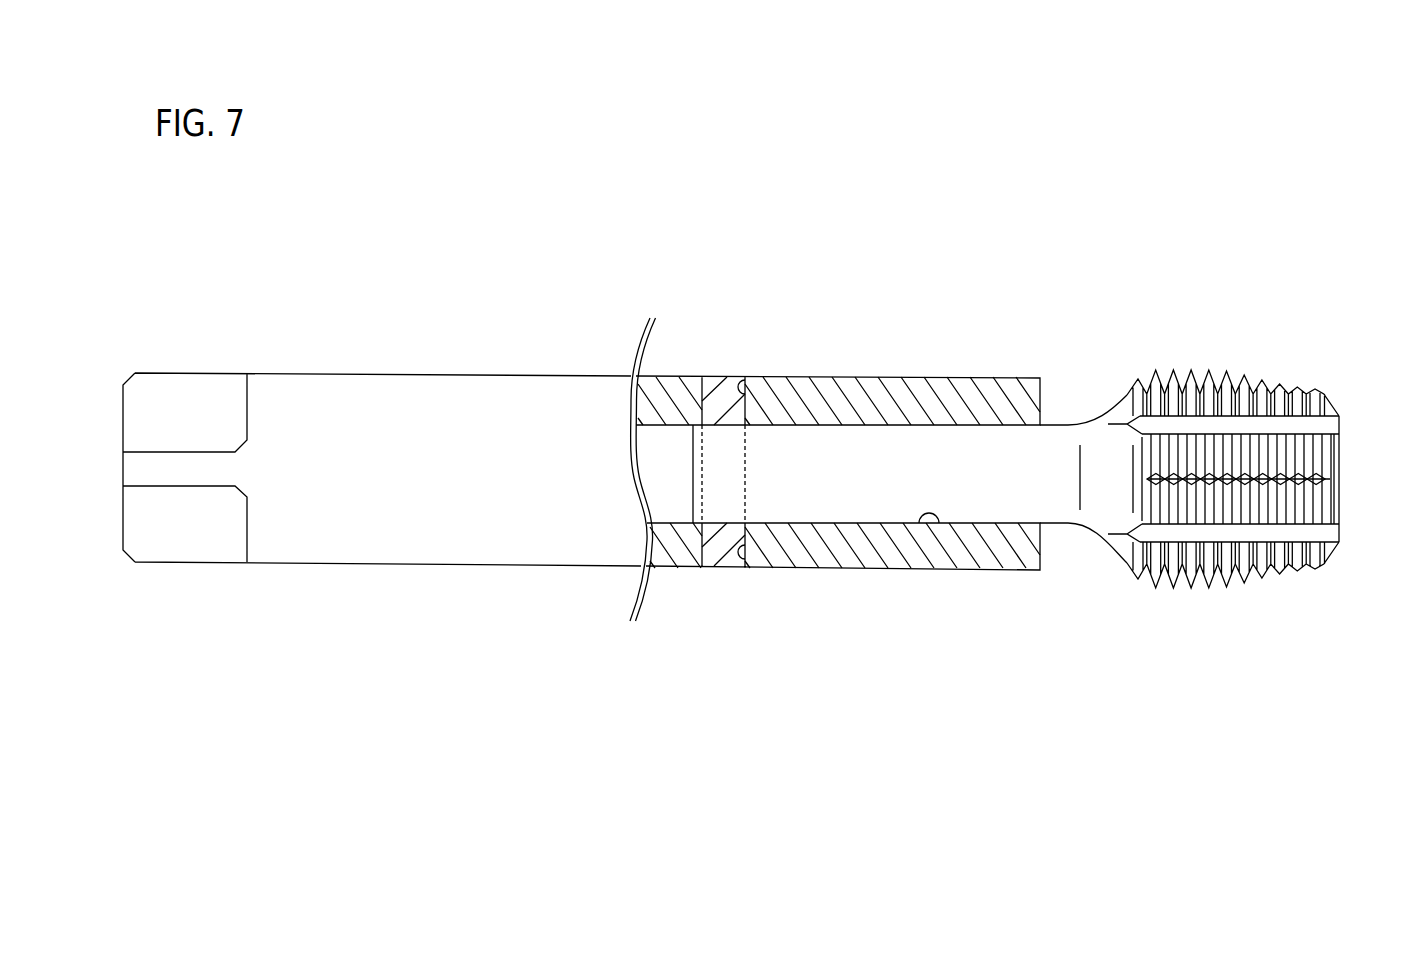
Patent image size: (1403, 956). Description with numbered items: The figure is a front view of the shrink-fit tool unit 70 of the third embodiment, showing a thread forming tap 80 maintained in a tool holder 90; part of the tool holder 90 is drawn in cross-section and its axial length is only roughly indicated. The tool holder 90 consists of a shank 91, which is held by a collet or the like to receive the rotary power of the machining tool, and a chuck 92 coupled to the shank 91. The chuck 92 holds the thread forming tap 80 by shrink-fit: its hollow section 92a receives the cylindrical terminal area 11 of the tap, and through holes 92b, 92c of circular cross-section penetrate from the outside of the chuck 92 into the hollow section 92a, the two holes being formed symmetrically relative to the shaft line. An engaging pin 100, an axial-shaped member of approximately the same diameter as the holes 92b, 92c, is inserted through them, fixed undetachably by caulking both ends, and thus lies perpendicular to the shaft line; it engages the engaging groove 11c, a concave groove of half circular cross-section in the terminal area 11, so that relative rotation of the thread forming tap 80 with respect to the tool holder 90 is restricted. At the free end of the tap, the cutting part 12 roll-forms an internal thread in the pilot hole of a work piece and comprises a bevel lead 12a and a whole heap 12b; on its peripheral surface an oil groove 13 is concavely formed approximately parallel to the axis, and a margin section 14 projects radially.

The shrink-fit tool unit 70 is at (1107, 175).
The thread forming tap 80 is at (1253, 330).
The tool holder 90 is at (673, 275).
The shank 91 is at (425, 388).
The chuck 92 is at (858, 395).
The hollow section 92a is at (927, 523).
The hole 92b is at (743, 379).
The hole 92c is at (743, 560).
The engaging pin 100 is at (707, 393).
The cylindrical terminal area 11 is at (807, 510).
The engaging groove 11c is at (745, 475).
The cutting part 12 is at (1308, 657).
The bevel lead 12a is at (1312, 598).
The whole heap 12b is at (1108, 598).
The oil groove 13 is at (1137, 417).
The margin section 14 is at (1147, 479).